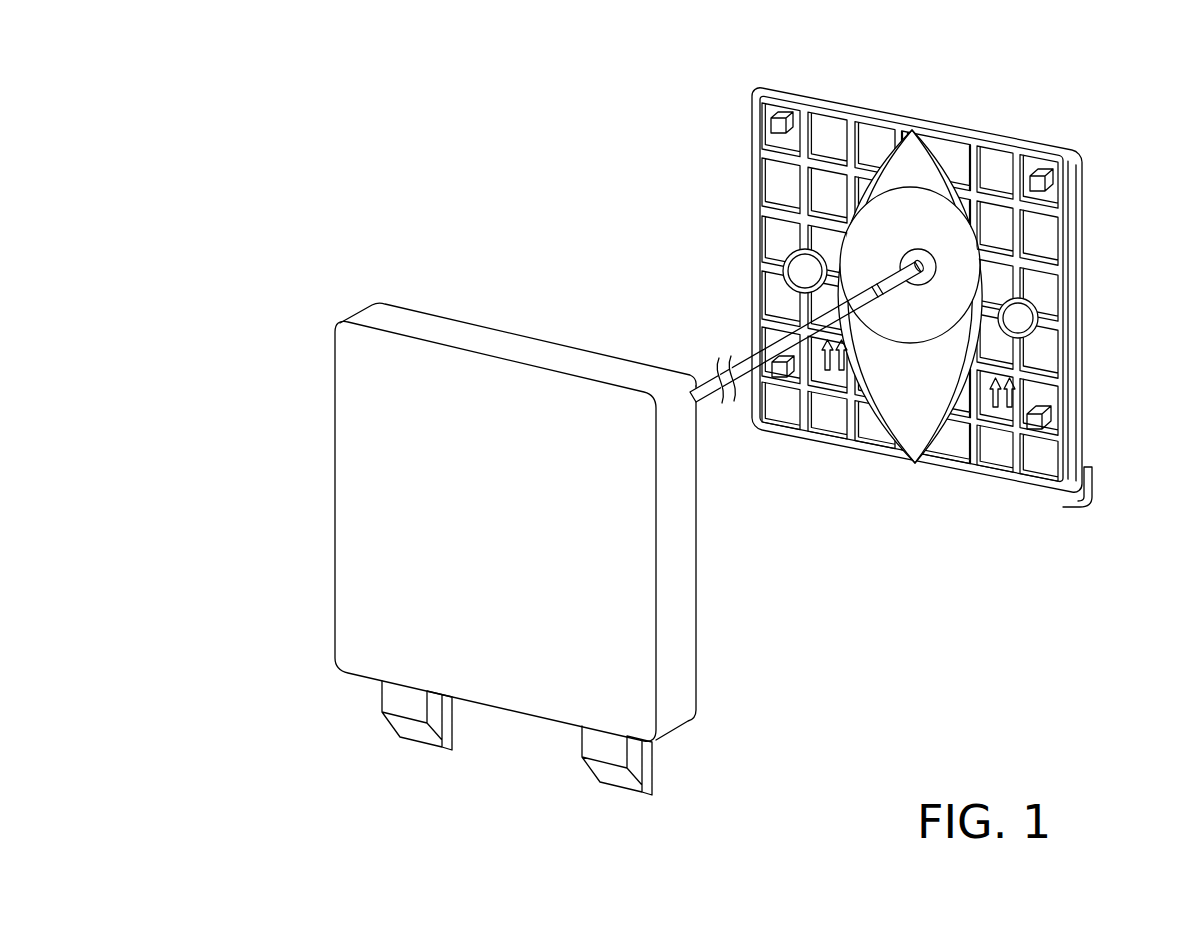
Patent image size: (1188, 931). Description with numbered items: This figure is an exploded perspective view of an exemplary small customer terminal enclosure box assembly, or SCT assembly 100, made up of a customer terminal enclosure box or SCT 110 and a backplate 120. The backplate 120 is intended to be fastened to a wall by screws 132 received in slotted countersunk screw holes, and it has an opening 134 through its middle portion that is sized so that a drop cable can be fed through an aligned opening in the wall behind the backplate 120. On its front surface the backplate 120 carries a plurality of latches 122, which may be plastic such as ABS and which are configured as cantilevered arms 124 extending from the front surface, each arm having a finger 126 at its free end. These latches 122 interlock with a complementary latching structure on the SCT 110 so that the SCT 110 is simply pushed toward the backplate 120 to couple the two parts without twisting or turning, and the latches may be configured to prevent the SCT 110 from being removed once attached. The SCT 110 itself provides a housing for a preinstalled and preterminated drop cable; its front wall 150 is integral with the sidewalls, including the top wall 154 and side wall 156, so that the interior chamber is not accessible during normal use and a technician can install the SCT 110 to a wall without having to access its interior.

The SCT assembly 100 is at (195, 88).
The SCT 110 is at (531, 530).
The backplate 120 is at (1050, 242).
The latches 122 is at (1034, 172).
The cantilevered arms 124 is at (1044, 421).
The finger 126 is at (1046, 410).
The screws 132 is at (1036, 306).
The opening 134 is at (897, 226).
The front wall 150 is at (637, 585).
The top wall 154 is at (485, 342).
The side wall 156 is at (685, 652).